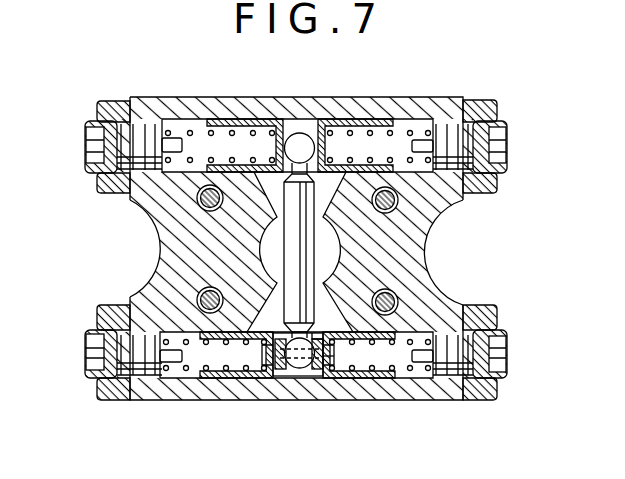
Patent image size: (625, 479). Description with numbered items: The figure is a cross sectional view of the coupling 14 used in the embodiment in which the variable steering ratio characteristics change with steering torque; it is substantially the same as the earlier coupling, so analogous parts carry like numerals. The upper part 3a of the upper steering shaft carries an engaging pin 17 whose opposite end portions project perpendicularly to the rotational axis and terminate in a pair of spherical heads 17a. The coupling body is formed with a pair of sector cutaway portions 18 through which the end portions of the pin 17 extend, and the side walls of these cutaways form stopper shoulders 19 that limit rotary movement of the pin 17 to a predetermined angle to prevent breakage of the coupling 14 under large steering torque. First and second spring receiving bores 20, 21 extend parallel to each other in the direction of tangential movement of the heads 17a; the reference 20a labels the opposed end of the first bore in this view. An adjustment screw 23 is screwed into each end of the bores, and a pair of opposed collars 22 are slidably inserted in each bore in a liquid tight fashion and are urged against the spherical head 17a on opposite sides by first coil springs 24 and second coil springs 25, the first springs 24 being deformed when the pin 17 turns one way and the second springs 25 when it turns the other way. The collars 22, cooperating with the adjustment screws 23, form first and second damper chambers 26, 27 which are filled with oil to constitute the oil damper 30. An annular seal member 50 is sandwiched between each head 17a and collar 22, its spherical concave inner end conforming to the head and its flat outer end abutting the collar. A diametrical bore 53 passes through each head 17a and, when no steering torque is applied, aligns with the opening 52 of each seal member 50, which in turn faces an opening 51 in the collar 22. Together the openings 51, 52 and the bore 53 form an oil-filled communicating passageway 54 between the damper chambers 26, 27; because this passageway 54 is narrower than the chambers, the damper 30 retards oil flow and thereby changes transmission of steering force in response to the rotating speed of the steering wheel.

The coupling 14 is at (139, 72).
The oil damper 30 is at (145, 297).
The stopper shoulders 19 is at (260, 213).
The sector cutaway portions 18 is at (323, 199).
The upper part of the upper steering shaft 3a is at (342, 245).
The engaging pin 17 is at (301, 262).
The spherical heads 17a is at (286, 97).
The adjustment screws 23 is at (84, 128).
The second coil springs 25 is at (412, 97).
The first coil springs 24 is at (175, 97).
The collars 22 is at (232, 97).
The first spring receiving bore 20 is at (205, 97).
The right screw tip 20a is at (310, 97).
The second damper chamber 27 is at (213, 372).
The first damper chamber 26 is at (418, 372).
The annular seal member 50 is at (278, 372).
The second spring receiving bore 21 is at (291, 376).
The communicating passageway 54 is at (303, 376).
The opening in the collar 51 is at (260, 374).
The opening of the seal member 52 is at (331, 371).
The diametrical bore 53 is at (317, 336).